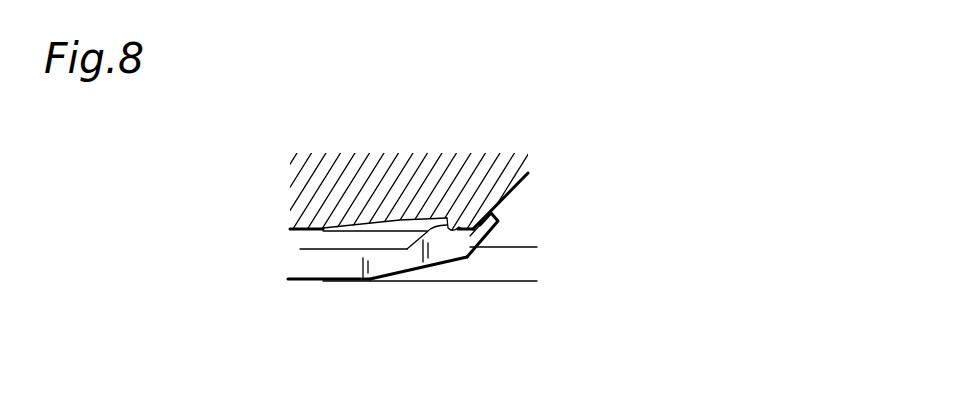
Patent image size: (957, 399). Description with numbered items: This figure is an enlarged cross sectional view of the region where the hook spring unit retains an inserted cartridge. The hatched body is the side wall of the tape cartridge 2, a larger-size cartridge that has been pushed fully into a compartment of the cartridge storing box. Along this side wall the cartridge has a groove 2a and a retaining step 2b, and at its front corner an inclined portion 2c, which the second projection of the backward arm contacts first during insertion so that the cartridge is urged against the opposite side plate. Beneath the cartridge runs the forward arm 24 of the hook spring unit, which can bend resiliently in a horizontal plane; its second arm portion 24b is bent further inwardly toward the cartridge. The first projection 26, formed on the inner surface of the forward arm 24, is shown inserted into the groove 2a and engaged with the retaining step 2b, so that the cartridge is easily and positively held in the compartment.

The 3480 tape cartridge 2 is at (530, 176).
The groove 2a is at (410, 232).
The retaining step 2b is at (474, 236).
The inclined portion 2c is at (502, 202).
The forward arm 24 is at (348, 265).
The second arm portion 24b is at (483, 229).
The first projection 26 is at (438, 235).